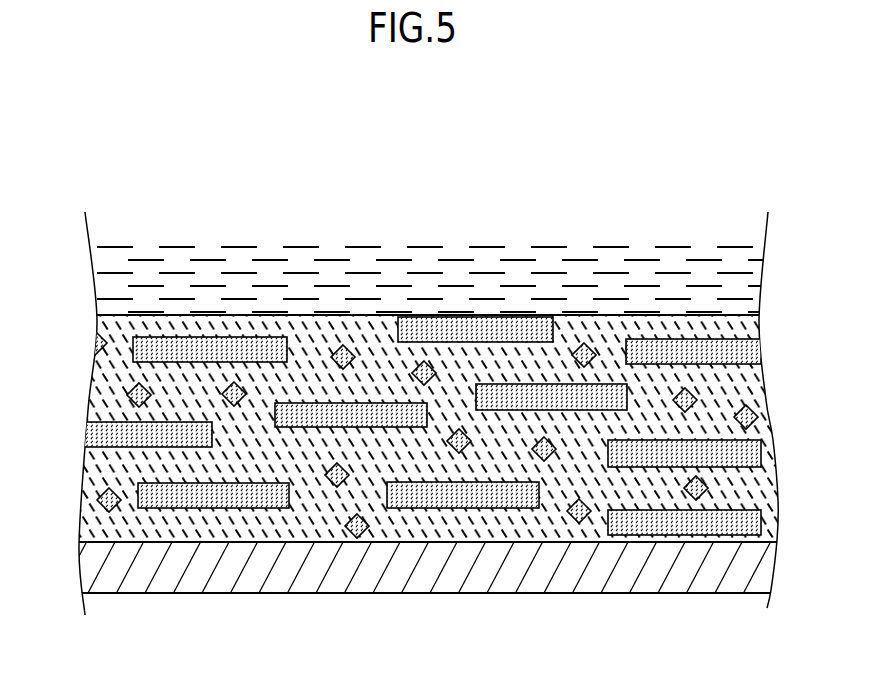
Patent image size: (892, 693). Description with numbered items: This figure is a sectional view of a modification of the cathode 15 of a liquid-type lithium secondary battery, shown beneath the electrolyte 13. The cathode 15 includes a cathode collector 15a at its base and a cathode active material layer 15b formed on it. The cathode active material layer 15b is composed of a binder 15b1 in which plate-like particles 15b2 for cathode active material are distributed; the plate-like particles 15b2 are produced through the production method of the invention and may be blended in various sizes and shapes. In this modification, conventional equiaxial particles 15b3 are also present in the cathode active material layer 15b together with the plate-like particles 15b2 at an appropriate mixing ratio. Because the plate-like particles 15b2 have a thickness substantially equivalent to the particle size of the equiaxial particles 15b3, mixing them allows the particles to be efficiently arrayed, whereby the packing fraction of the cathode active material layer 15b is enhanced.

The electrolyte 13 is at (752, 277).
The cathode 15 is at (430, 413).
The cathode collector 15a is at (89, 571).
The cathode active material layer 15b is at (410, 407).
The binder 15b1 is at (597, 321).
The plate-like particles for cathode active material 15b2 is at (476, 318).
The equiaxial particles 15b3 is at (347, 300).